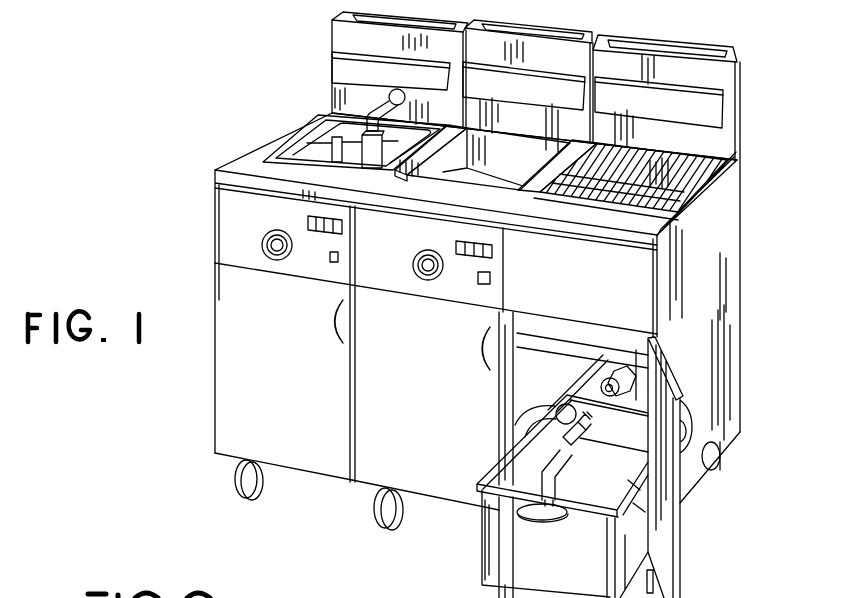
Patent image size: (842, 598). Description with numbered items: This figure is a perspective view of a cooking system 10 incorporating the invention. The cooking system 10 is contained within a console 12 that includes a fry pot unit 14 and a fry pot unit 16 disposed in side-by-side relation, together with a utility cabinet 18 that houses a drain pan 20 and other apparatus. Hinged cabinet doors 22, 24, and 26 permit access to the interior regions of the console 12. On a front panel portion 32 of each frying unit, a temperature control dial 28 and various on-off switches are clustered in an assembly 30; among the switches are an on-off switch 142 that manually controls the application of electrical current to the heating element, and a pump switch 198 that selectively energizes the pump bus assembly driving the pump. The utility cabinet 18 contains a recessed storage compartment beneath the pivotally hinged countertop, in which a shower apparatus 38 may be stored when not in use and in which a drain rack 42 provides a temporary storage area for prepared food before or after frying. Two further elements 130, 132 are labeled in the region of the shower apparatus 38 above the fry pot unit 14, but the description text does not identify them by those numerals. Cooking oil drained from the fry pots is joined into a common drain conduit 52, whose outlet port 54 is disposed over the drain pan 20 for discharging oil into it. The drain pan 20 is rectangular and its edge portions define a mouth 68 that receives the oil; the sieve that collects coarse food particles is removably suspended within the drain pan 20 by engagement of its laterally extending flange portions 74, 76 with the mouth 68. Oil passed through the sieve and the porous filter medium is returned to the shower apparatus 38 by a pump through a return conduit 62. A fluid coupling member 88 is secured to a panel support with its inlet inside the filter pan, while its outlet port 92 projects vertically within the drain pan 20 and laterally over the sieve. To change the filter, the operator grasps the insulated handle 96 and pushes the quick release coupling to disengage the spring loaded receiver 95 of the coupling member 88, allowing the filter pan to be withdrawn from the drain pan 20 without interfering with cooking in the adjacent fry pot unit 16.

The cooking system 10 is at (258, 80).
The console 12 is at (700, 42).
The fry pot unit 14 is at (292, 153).
The fry pot unit 16 is at (430, 176).
The utility cabinet 18 is at (700, 177).
The drain pan 20 is at (510, 515).
The cabinet door 22 is at (235, 402).
The cabinet door 24 is at (367, 460).
The cabinet door 26 is at (677, 560).
The temperature control dial 28 is at (262, 242).
The assembly 30 is at (313, 222).
The front panel portion 32 is at (211, 258).
The shower apparatus 38 is at (296, 157).
The drain rack 42 is at (673, 198).
The common drain conduit 52 is at (523, 440).
The outlet port 54 is at (558, 407).
The return conduit 62 is at (551, 515).
The mouth 68 is at (632, 484).
The flange portion 74 is at (488, 487).
The flange portion 76 is at (640, 507).
The fluid coupling member 88 is at (570, 447).
The outlet port 92 is at (593, 425).
The spring loaded receiver 95 is at (613, 368).
The insulated handle 96 is at (542, 497).
The oil return nozzle 130 is at (394, 92).
The return tube 132 is at (391, 110).
The on-off switch 142 is at (310, 233).
The pump switch 198 is at (334, 234).